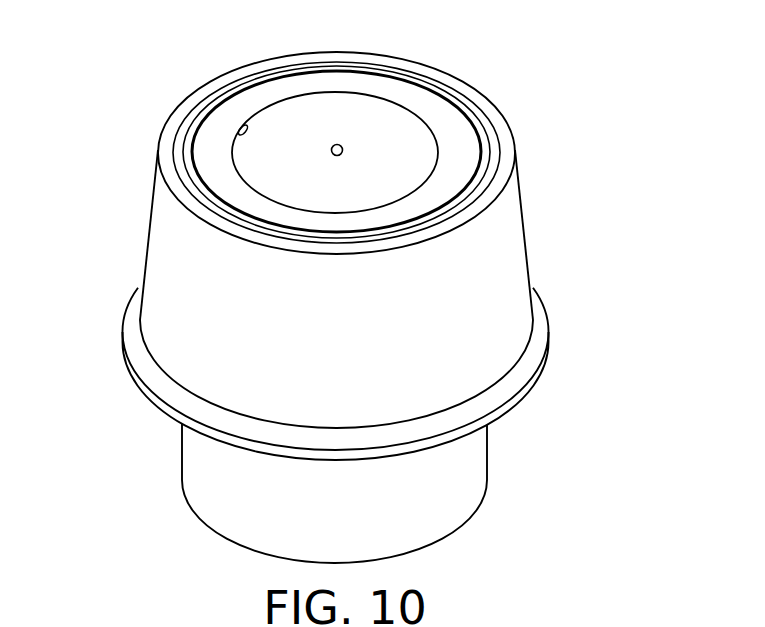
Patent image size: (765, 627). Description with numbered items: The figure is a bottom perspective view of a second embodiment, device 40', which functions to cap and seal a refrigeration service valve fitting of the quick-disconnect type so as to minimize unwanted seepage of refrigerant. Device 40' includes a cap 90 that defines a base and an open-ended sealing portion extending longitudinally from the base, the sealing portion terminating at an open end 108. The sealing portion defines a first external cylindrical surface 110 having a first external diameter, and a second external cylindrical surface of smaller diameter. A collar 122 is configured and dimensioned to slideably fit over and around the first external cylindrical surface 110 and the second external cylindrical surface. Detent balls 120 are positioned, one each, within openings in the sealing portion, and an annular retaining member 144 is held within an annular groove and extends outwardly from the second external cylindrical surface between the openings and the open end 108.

The device 40' is at (325, 281).
The annular retaining member 144 is at (455, 92).
The detent balls 120 is at (339, 143).
The open end 108 is at (241, 125).
The collar 122 is at (170, 262).
The first external cylindrical surface 110 is at (199, 472).
The cap 90 is at (473, 482).